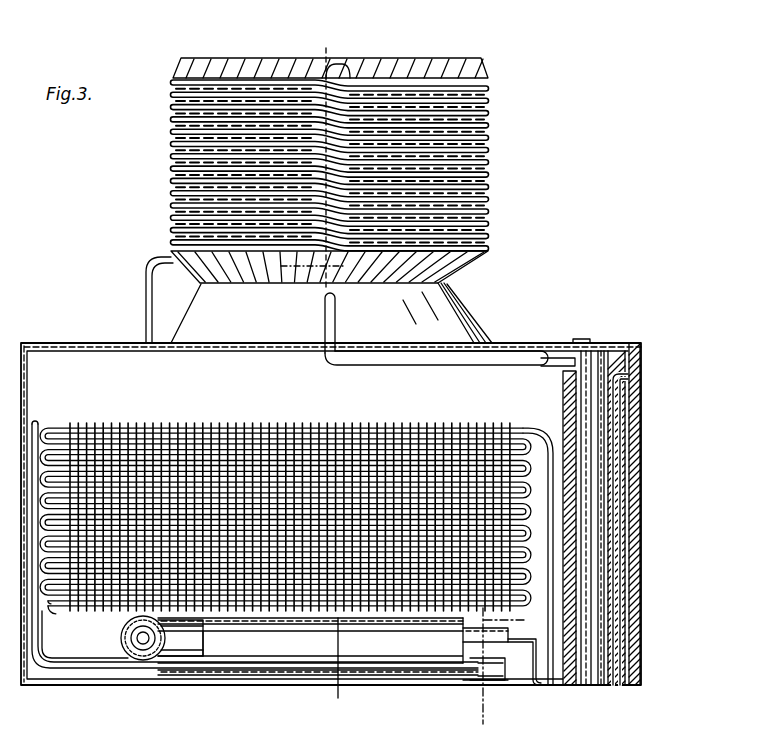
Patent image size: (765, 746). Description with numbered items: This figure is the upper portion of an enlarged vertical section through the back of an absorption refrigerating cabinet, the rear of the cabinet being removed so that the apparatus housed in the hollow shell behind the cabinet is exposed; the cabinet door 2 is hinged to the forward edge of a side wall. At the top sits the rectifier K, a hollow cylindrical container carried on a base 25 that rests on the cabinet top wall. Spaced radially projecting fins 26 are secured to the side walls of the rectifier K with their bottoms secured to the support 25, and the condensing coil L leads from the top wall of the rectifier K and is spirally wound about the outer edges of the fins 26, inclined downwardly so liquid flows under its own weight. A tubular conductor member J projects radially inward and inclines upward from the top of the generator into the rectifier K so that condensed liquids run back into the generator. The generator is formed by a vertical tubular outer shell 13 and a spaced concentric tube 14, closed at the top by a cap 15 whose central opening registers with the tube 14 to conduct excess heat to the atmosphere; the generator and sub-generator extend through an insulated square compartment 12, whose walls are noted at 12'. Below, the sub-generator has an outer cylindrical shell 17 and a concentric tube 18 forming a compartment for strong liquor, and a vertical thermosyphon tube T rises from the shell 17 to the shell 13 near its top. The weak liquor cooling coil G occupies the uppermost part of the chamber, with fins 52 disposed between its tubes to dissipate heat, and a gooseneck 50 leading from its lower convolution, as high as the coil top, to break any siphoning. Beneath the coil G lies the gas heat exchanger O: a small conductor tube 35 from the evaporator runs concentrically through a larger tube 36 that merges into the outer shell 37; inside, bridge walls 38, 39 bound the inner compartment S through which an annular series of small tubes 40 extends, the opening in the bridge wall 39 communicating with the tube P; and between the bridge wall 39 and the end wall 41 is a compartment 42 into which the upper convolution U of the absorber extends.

The rectifier K is at (330, 38).
The fins 26 is at (382, 52).
The condensing coil L is at (481, 93).
The base 25 is at (456, 300).
The tubular conductor member J is at (497, 347).
The cap 15 is at (577, 333).
The tube 14 is at (606, 348).
The inner insulating wall 12' is at (543, 528).
The square compartment 12 is at (598, 534).
The thermosyphon tube T is at (619, 432).
The tubular outer shell 13 is at (602, 480).
The door 2 is at (538, 428).
The weak liquor cooling coil G is at (263, 416).
The fins 52 is at (207, 416).
The gooseneck 50 is at (30, 417).
The larger tube 36 is at (114, 619).
The small conductor tube 35 is at (129, 632).
The bridge wall 38 is at (204, 649).
The small tubes 40 is at (255, 619).
The concentric tube 18 is at (333, 637).
The bridge wall 39 is at (455, 627).
The outer shell 37 is at (379, 668).
The inner compartment S is at (406, 647).
The gas heat exchanger O is at (285, 662).
The upper convolution U is at (463, 684).
The end wall 41 is at (506, 634).
The compartment 42 is at (500, 673).
The tube P is at (525, 681).
The outer cylindrical shell 17 is at (512, 672).